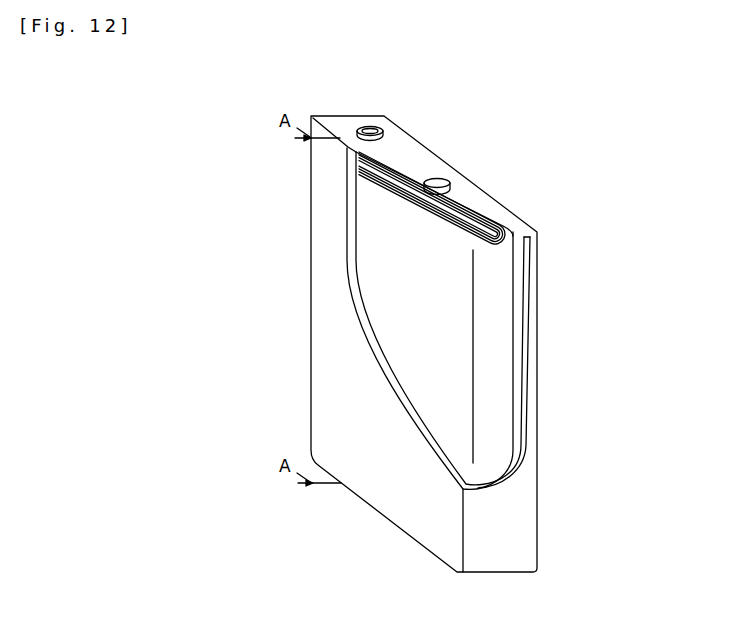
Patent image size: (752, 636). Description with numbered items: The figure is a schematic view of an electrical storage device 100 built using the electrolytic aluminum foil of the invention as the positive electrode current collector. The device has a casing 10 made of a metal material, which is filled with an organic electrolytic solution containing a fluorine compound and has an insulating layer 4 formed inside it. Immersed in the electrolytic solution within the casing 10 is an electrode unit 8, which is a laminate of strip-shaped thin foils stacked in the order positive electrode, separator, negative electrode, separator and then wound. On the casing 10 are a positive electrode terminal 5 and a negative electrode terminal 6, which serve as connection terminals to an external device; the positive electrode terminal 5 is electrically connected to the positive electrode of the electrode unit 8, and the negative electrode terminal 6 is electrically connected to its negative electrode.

The electrical storage device 100 is at (523, 113).
The casing 10 is at (517, 529).
The electrode unit 8 is at (492, 285).
The insulating layer 4 is at (395, 392).
The positive electrode terminal 5 is at (372, 126).
The negative electrode terminal 6 is at (433, 179).